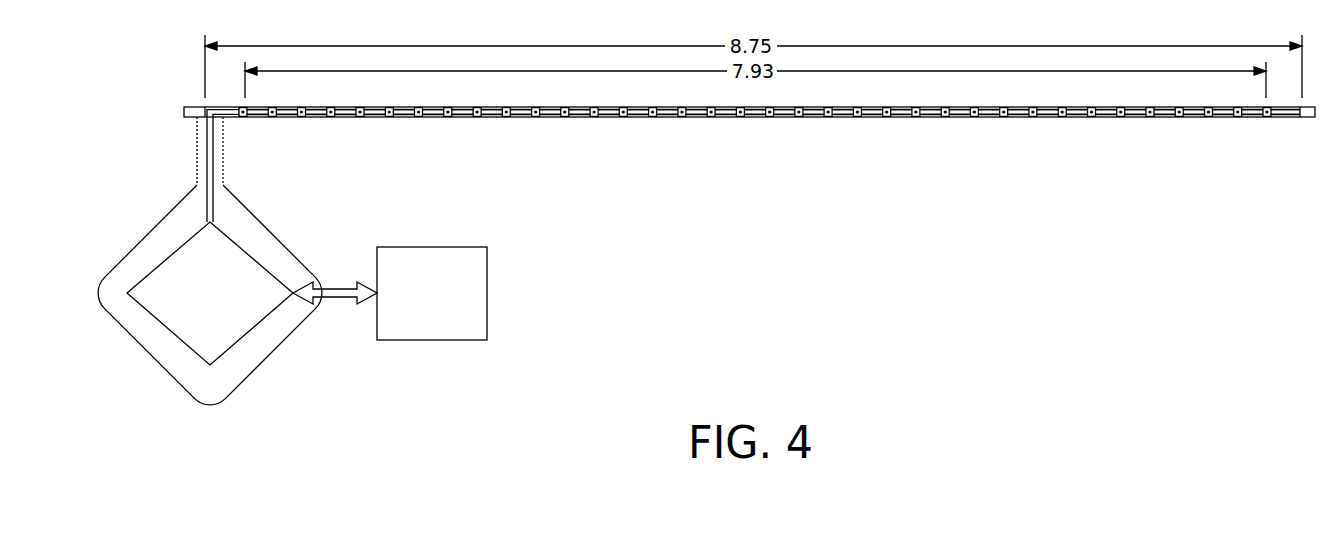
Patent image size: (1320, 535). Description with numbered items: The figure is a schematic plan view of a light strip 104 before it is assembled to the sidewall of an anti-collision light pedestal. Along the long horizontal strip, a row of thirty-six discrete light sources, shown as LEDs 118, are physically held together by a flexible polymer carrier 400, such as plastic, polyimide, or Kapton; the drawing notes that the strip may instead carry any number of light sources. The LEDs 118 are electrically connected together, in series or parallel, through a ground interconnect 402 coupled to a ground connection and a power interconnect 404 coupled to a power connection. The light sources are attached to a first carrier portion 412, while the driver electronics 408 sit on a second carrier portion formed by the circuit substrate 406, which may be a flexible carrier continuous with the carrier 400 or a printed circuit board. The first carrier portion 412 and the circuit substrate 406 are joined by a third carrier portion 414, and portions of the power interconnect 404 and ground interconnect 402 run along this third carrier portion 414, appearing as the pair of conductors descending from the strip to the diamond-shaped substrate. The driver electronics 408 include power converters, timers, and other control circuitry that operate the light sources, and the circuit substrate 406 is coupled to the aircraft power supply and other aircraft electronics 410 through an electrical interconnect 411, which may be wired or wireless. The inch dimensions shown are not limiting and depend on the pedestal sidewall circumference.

The light strip 104 is at (1094, 130).
The LEDs 118 is at (535, 118).
The carrier 400 is at (197, 106).
The ground interconnect 402 is at (205, 171).
The power interconnect 404 is at (216, 171).
The circuit substrate 406 is at (210, 295).
The driver electronics 408 is at (210, 293).
The power supply 410 is at (432, 293).
The electrical interconnect 411 is at (335, 302).
The first carrier portion 412 is at (1308, 118).
The third carrier portion 414 is at (197, 134).